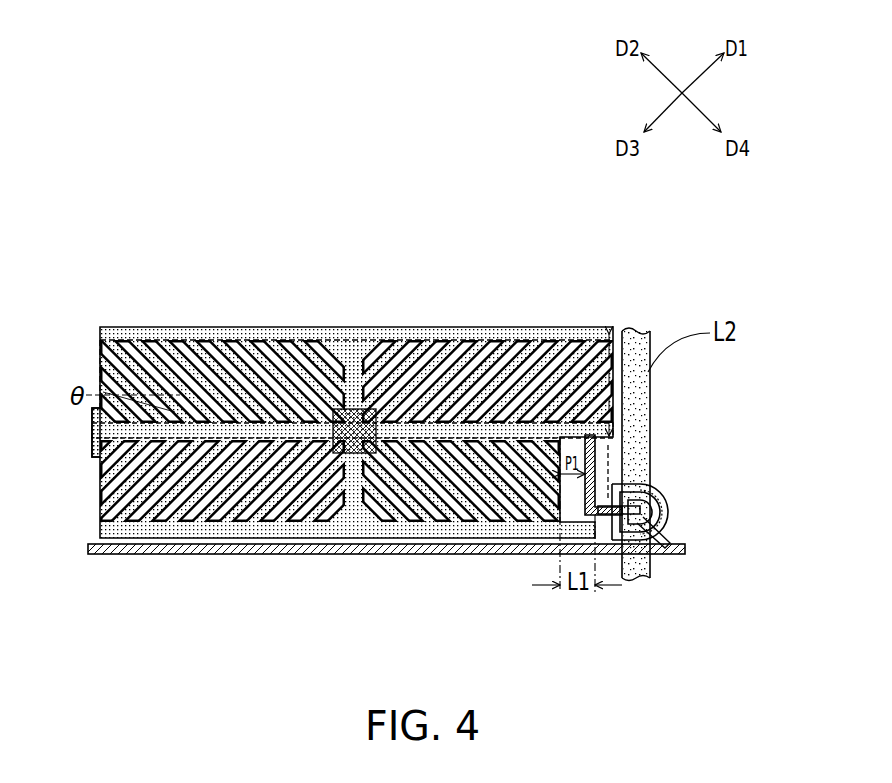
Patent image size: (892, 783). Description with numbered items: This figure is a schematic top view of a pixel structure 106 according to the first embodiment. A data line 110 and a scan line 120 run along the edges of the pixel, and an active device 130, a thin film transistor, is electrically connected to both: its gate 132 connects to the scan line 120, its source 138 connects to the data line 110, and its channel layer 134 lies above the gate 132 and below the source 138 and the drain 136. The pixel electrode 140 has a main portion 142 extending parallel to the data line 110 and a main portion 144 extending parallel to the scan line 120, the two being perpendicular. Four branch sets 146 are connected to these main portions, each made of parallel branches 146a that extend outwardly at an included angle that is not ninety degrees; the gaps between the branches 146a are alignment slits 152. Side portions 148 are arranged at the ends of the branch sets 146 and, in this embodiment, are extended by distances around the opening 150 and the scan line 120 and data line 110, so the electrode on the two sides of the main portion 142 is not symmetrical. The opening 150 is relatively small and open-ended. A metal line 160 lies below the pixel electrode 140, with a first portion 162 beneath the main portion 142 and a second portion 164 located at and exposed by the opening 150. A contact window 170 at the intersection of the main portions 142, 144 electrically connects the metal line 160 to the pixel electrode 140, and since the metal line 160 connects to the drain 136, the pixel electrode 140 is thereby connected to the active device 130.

The display device 106 is at (742, 624).
The data line 110 is at (157, 556).
The scan line 120 is at (650, 396).
The active device 130 is at (696, 495).
The gate 132 is at (668, 516).
The channel layer 134 is at (668, 500).
The drain 136 is at (655, 490).
The source 138 is at (645, 468).
The pixel electrode 140 is at (306, 387).
The main portion 142 is at (250, 338).
The main portion 144 is at (327, 338).
The branch set 146 is at (207, 340).
The branch 146a is at (97, 363).
The side portion 148 is at (157, 338).
The opening 150 is at (658, 434).
The alignment slit 152 is at (542, 338).
The metal line 160 is at (488, 387).
The first portion 162 is at (418, 338).
The second portion 164 is at (492, 428).
The contact window 170 is at (350, 455).